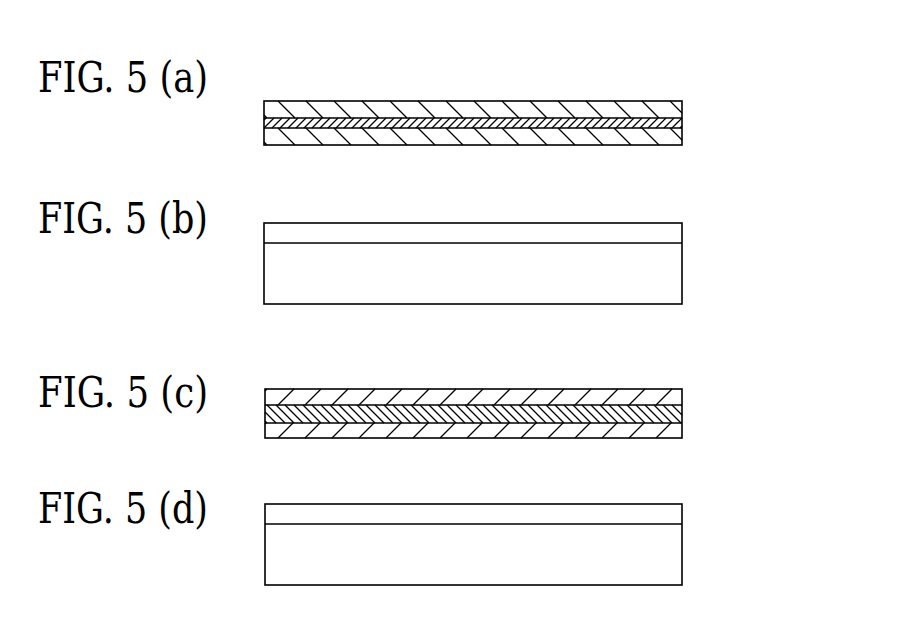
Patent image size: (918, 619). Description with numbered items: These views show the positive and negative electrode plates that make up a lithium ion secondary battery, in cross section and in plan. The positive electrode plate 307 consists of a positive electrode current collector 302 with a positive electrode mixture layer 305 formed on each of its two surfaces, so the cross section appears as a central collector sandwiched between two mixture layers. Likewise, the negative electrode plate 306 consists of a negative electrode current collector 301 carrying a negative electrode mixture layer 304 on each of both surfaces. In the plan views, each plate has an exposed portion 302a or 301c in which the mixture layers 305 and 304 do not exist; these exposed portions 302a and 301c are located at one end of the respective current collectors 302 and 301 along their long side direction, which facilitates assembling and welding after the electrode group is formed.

In FIG. 5A, the positive electrode mixture layer 305 is at (676, 108).
In FIG. 5B, the positive electrode mixture layer 305 is at (676, 280).
In FIG. 5A, the positive electrode current collector 302 is at (676, 124).
In FIG. 5A, the positive electrode plate 307 is at (553, 126).
In FIG. 5B, the exposed portion 302a is at (676, 232).
In FIG. 5C, the negative electrode mixture layer 304 is at (676, 397).
In FIG. 5D, the negative electrode mixture layer 304 is at (676, 561).
In FIG. 5C, the negative electrode current collector 301 is at (676, 414).
In FIG. 5C, the negative electrode plate 306 is at (553, 413).
In FIG. 5D, the exposed portion 301c is at (676, 512).